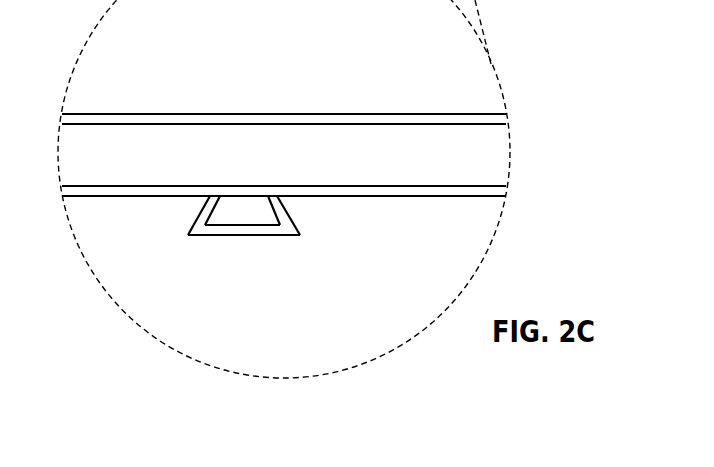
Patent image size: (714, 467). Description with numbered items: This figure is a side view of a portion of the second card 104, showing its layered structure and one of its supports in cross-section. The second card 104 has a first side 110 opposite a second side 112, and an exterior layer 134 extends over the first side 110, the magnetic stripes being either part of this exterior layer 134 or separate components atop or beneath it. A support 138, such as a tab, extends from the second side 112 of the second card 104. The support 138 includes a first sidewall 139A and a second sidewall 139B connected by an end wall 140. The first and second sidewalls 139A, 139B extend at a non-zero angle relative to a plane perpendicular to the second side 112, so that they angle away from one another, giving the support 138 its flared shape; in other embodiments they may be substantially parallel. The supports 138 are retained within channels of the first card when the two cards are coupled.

The second card 104 is at (284, 157).
The first side of second card 110 is at (217, 113).
The second side of second card 112 is at (284, 226).
The exterior layer 134 is at (123, 197).
The support 138 is at (247, 269).
The first sidewall 139A is at (202, 215).
The second sidewall 139B is at (291, 218).
The end wall 140 is at (247, 237).